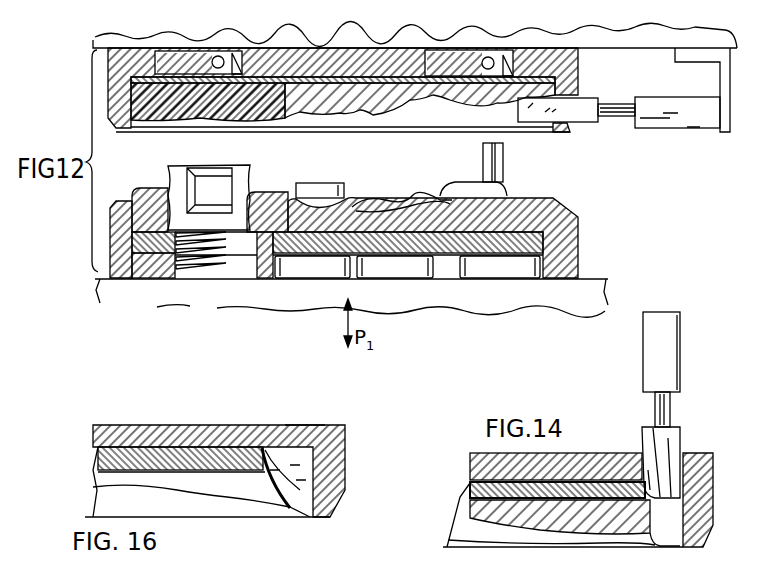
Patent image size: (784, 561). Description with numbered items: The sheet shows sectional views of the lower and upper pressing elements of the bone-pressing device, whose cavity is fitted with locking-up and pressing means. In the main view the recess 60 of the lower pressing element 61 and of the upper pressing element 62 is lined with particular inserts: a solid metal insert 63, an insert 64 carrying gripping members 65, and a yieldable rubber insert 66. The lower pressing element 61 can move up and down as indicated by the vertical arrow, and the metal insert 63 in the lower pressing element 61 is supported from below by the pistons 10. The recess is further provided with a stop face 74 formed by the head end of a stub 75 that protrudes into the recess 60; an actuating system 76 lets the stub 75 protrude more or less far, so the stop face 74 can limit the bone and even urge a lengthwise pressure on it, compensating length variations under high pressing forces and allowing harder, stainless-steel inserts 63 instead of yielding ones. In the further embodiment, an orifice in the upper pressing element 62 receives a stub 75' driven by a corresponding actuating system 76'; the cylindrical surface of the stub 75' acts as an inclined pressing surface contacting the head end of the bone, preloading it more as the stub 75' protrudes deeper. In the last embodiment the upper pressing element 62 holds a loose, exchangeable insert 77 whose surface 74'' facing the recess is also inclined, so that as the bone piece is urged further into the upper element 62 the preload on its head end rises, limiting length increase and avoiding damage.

In FIG. 12, the pistons 10 is at (277, 261).
In FIG. 12, the recess 60 is at (392, 183).
In FIG. 12, the lower pressing element 61 is at (578, 268).
In FIG. 12, the upper pressing element 62 is at (580, 77).
In FIG. 16, the upper pressing element 62 is at (162, 436).
In FIG. 14, the upper pressing element 62 is at (613, 460).
In FIG. 12, the metal insert 63 is at (422, 213).
In FIG. 16, the metal insert 63 is at (213, 483).
In FIG. 14, the metal insert 63 is at (470, 513).
In FIG. 12, the insert with gripping members 64 is at (279, 188).
In FIG. 12, the gripping members 65 is at (245, 170).
In FIG. 12, the rubber insert 66 is at (153, 108).
In FIG. 12, the stop face 74 is at (555, 131).
In FIG. 12, the stub 75 is at (604, 134).
In FIG. 12, the actuating system 76 is at (677, 131).
In FIG. 16, the exchangeable insert 77 is at (298, 424).
In FIG. 16, the inclined surface 74'' is at (325, 472).
In FIG. 14, the stub 75' is at (680, 449).
In FIG. 14, the actuating system 76' is at (679, 352).